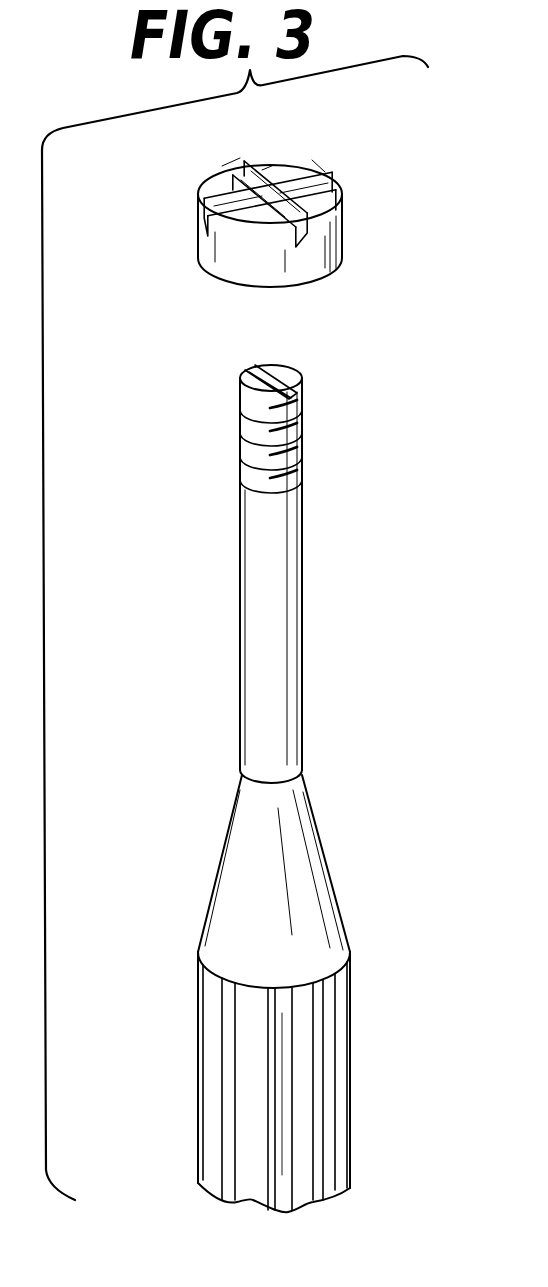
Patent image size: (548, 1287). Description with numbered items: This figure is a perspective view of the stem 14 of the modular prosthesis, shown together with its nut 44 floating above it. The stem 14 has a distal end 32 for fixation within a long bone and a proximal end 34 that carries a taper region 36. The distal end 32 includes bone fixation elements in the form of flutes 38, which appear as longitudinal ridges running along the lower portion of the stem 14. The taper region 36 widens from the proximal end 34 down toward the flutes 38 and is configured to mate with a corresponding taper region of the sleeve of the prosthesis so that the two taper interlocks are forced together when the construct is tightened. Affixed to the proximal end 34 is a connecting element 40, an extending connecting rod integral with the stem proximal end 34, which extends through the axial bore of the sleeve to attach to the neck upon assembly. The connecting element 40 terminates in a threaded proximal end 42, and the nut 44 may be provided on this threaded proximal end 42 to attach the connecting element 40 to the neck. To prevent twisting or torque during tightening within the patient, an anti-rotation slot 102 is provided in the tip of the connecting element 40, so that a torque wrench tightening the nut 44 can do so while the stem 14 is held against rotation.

The stem 14 is at (176, 537).
The nut 44 is at (200, 238).
The anti-rotation slot 102 is at (263, 368).
The threaded proximal end 42 is at (300, 405).
The connecting element 40 is at (305, 563).
The proximal end 34 is at (305, 768).
The taper region 36 is at (330, 864).
The flutes 38 is at (307, 1072).
The distal end 32 is at (352, 1188).